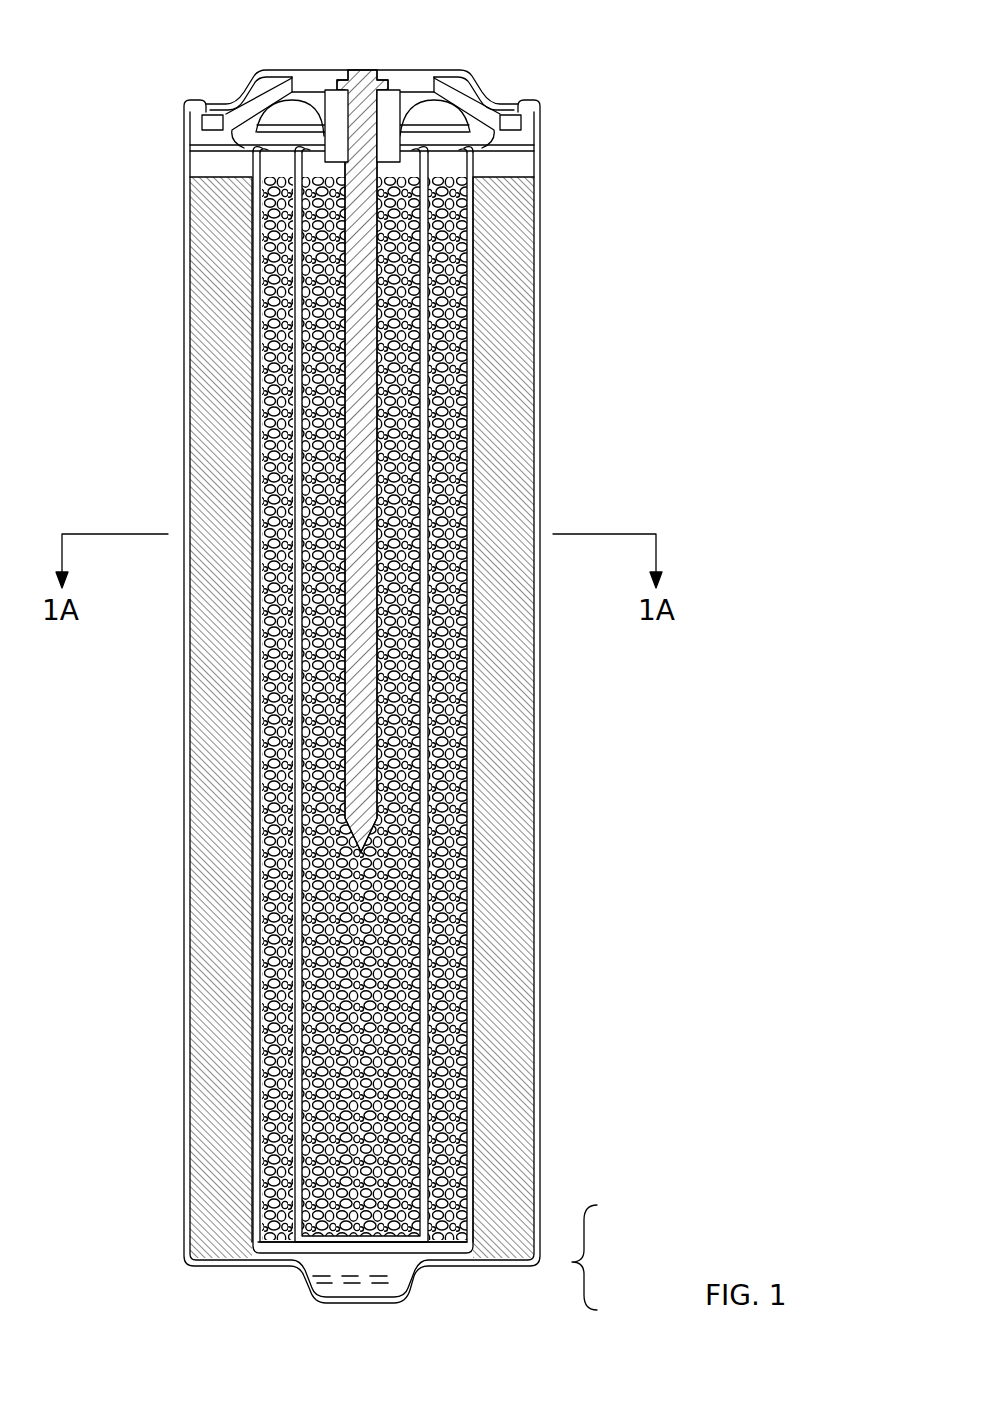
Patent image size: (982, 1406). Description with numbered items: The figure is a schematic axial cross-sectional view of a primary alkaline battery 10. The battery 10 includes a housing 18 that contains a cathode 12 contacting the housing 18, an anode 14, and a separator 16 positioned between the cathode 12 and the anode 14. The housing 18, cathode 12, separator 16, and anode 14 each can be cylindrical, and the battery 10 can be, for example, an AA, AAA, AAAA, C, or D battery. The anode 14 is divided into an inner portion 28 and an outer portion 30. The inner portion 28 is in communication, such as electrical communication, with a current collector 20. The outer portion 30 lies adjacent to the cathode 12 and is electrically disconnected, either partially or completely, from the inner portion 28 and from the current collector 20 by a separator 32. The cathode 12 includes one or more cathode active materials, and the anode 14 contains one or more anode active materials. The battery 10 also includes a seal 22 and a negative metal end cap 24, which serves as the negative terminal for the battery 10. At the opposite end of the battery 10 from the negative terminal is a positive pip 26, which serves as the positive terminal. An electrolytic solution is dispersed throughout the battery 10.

The primary alkaline battery 10 is at (655, 179).
The cathode 12 is at (215, 410).
The anode 14 is at (607, 1257).
The separator 16 is at (252, 848).
The housing 18 is at (540, 440).
The current collector 20 is at (367, 728).
The seal 22 is at (333, 108).
The negative metal end cap 24 is at (440, 74).
The positive pip 26 is at (375, 1282).
The inner portion 28 is at (400, 1230).
The outer portion 30 is at (450, 1080).
The separator 32 is at (427, 981).